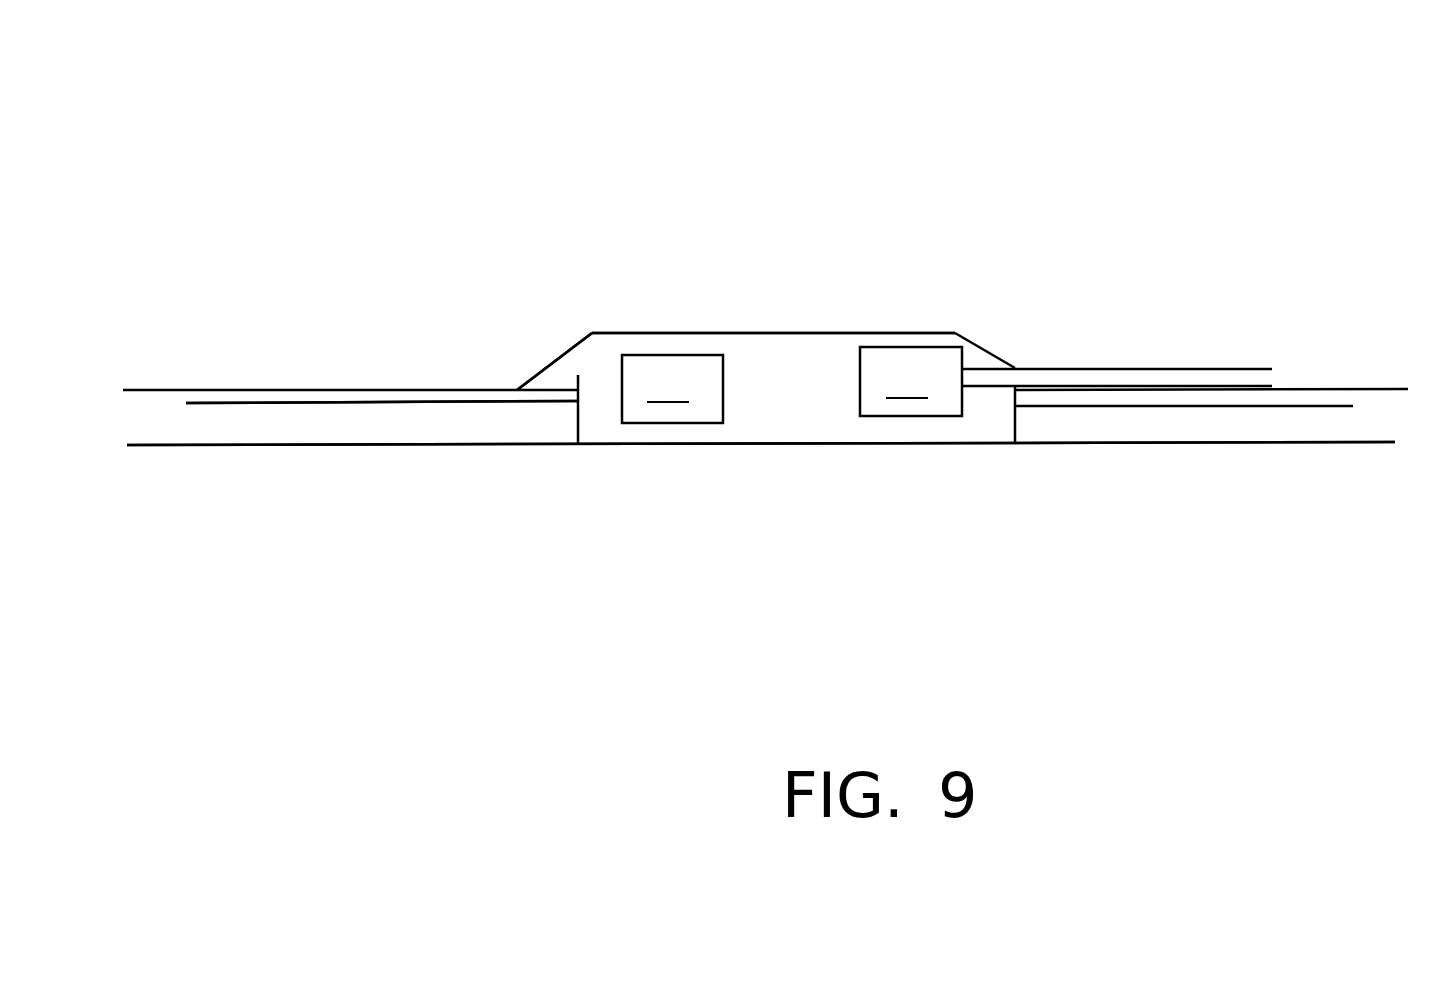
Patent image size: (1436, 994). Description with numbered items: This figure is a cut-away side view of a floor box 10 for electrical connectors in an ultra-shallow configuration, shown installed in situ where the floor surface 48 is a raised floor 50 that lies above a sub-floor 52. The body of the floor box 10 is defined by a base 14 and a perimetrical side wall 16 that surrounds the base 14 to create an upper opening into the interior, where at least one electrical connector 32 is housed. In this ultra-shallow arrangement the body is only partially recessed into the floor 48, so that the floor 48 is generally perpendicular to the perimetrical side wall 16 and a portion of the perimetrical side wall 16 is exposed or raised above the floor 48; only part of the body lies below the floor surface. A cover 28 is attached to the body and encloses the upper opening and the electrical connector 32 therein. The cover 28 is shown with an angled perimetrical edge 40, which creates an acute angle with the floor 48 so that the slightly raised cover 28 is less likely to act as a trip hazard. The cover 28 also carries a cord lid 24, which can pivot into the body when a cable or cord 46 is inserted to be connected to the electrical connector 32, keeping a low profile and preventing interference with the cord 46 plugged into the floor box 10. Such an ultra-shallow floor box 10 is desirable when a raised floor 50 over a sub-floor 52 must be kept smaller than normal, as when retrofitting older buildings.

The floor box 10 is at (1165, 237).
The base 14 is at (700, 444).
The perimetrical side wall 16 is at (577, 412).
The cord lid 24 is at (563, 375).
The cover 28 is at (690, 333).
The electrical connector 32 is at (792, 385).
The angled perimetrical edge 40 is at (546, 368).
The cable or cord 46 is at (1161, 369).
The floor surface 48 is at (1335, 388).
The raised floor 50 is at (323, 402).
The sub-floor 52 is at (1302, 443).